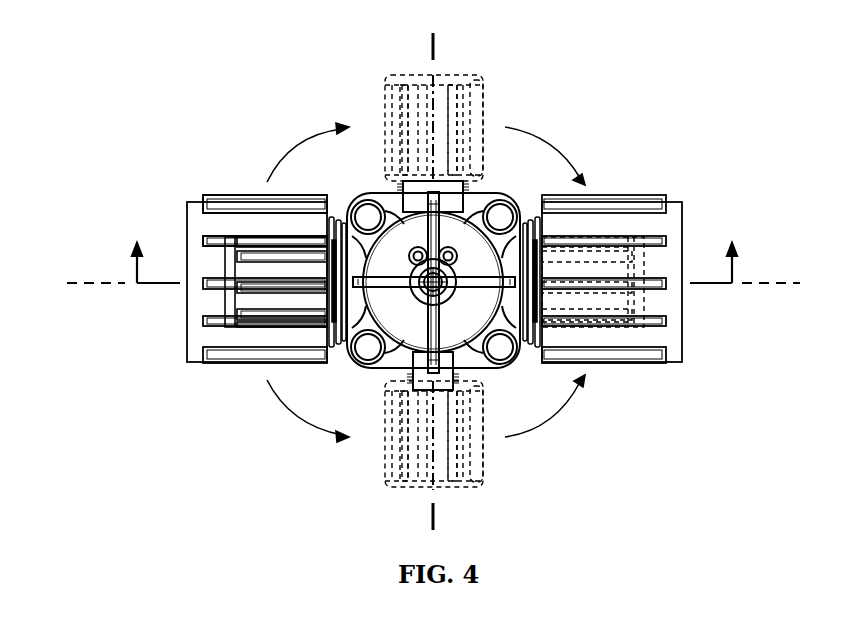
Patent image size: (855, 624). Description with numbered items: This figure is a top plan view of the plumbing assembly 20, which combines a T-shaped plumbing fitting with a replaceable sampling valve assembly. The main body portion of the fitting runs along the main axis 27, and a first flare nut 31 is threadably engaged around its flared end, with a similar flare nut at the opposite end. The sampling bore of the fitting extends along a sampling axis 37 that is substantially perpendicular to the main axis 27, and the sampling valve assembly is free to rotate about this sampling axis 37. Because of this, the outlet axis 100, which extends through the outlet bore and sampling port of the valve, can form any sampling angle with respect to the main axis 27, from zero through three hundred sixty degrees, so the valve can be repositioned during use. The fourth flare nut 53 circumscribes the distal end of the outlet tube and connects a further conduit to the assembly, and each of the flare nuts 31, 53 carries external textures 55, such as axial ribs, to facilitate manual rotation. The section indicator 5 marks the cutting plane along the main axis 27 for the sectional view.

The outlet axis 100 is at (435, 40).
The plumbing assembly 20 is at (746, 123).
The fourth flare nut 53 is at (483, 80).
The first flare nut 31 is at (185, 340).
The external textures 55 is at (240, 195).
The sampling axis 37 is at (418, 288).
The main axis 27 is at (85, 285).
The section view indicator FIG. 5 is at (435, 247).